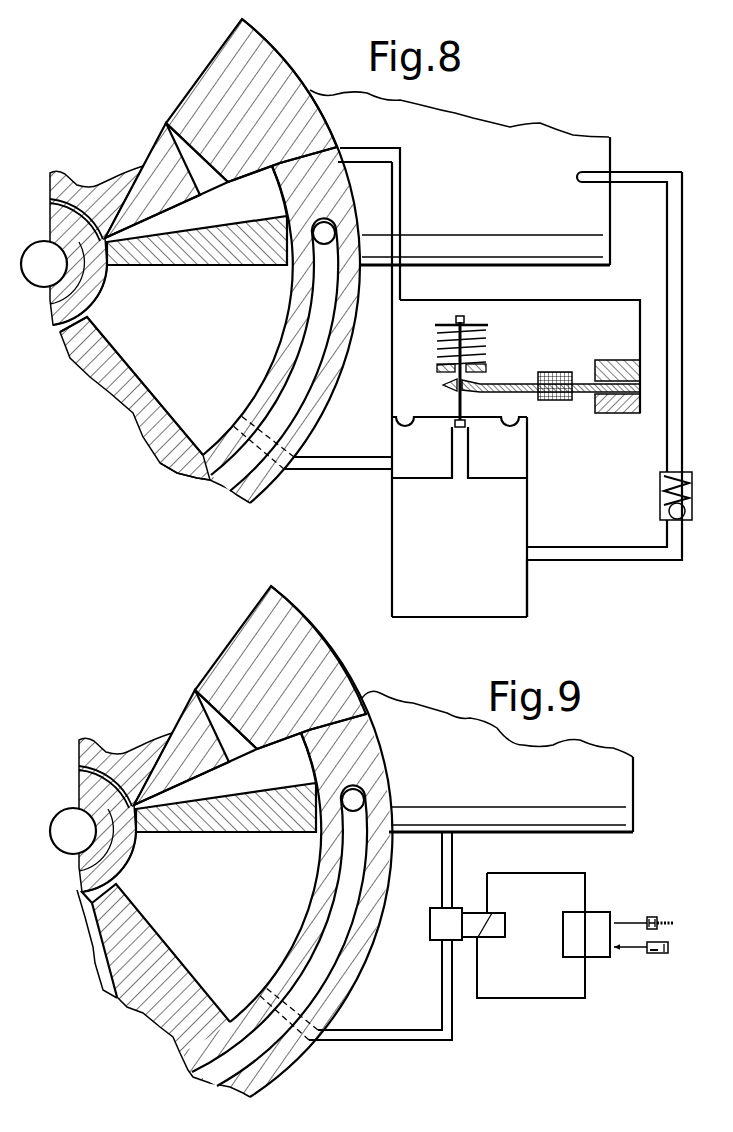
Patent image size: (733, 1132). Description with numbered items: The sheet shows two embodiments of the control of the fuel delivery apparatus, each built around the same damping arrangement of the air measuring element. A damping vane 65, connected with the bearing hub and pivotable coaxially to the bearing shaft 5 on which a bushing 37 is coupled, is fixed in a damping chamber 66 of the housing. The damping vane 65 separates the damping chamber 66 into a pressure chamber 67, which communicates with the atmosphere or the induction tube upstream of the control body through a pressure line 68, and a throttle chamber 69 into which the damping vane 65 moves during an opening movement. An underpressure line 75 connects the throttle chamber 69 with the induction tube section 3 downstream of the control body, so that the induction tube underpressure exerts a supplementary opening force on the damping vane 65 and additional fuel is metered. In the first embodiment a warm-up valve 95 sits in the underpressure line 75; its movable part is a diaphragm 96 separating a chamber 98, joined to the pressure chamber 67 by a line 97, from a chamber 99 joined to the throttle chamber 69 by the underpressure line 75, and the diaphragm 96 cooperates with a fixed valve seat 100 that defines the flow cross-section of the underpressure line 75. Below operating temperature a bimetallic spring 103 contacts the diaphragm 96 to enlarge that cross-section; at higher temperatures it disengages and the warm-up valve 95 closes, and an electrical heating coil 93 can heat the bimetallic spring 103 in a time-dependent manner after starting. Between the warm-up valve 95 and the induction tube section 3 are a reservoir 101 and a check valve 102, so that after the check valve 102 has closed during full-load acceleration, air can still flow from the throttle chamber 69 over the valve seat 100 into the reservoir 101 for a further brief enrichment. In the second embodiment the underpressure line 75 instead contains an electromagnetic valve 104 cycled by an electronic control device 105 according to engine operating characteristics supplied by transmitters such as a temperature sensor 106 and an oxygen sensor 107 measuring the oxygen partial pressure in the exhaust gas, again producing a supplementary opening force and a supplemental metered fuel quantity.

In FIG. 8, the induction tube section 3 is at (487, 245).
In FIG. 9, the induction tube section 3 is at (577, 817).
In FIG. 8, the bearing shaft 5 is at (44, 264).
In FIG. 9, the bearing shaft 5 is at (60, 826).
In FIG. 8, the bushing 37 is at (103, 294).
In FIG. 9, the bushing 37 is at (133, 860).
In FIG. 8, the damping vane 65 is at (212, 254).
In FIG. 9, the damping vane 65 is at (246, 816).
In FIG. 8, the damping chamber 66 is at (139, 398).
In FIG. 9, the damping chamber 66 is at (170, 968).
In FIG. 8, the pressure chamber 67 is at (260, 195).
In FIG. 9, the pressure chamber 67 is at (290, 762).
In FIG. 8, the pressure line 68 is at (167, 146).
In FIG. 9, the pressure line 68 is at (190, 716).
In FIG. 8, the throttle chamber 69 is at (233, 394).
In FIG. 9, the throttle chamber 69 is at (270, 948).
In FIG. 8, the underpressure line 75 is at (356, 462).
In FIG. 9, the underpressure line 75 is at (445, 861).
In FIG. 8, the electrical heating coil 93 is at (555, 372).
In FIG. 8, the warm-up valve 95 is at (384, 522).
In FIG. 8, the diaphragm 96 is at (420, 416).
In FIG. 8, the line 97 is at (396, 215).
In FIG. 8, the chamber 98 is at (536, 313).
In FIG. 8, the chamber 99 is at (512, 450).
In FIG. 8, the valve seat 100 is at (452, 428).
In FIG. 8, the reservoir 101 is at (514, 530).
In FIG. 8, the check valve 102 is at (657, 500).
In FIG. 8, the bimetallic spring 103 is at (512, 378).
In FIG. 9, the electromagnetic valve 104 is at (498, 921).
In FIG. 9, the electronic control device 105 is at (582, 946).
In FIG. 9, the temperature sensor 106 is at (665, 956).
In FIG. 9, the oxygen sensor 107 is at (652, 914).